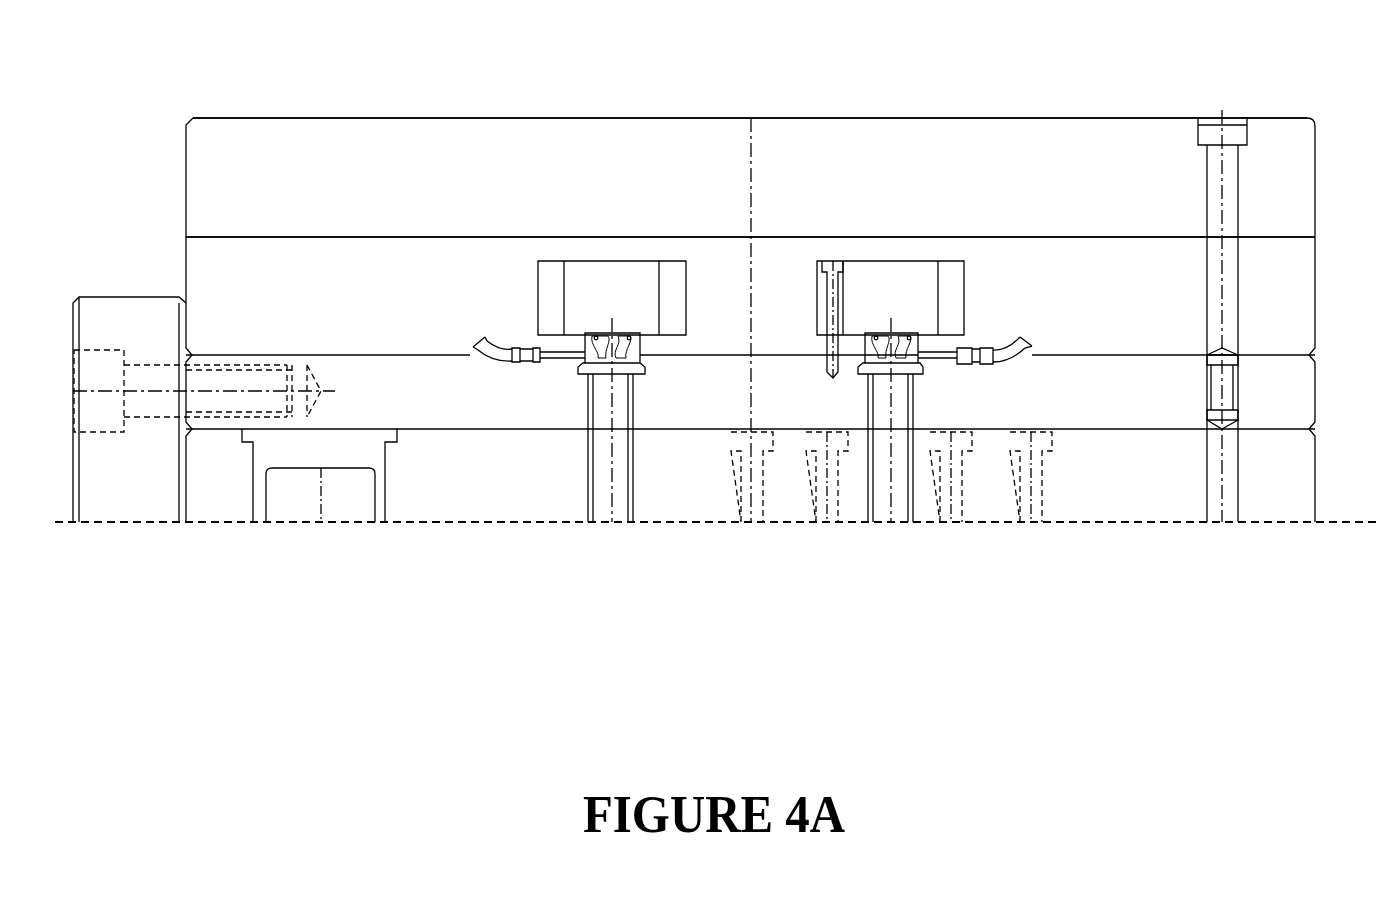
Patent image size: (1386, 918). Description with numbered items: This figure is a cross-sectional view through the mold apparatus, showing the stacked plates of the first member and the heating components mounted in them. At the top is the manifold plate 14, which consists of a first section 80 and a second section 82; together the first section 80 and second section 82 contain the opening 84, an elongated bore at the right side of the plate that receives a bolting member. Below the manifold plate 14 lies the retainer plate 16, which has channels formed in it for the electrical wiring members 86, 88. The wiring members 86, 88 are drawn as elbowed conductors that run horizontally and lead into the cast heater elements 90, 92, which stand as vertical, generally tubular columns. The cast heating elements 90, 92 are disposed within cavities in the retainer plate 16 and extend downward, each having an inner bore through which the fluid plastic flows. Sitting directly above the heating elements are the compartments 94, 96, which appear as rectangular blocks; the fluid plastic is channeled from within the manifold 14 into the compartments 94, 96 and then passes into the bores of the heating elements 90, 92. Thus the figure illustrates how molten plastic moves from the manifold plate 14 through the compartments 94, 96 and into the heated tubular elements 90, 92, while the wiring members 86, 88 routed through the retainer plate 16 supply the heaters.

The manifold plate 14 is at (417, 237).
The retainer plate 16 is at (340, 390).
The first section 80 is at (488, 150).
The second section 82 is at (712, 275).
The opening 84 is at (1207, 265).
The electrical wiring member 86 is at (483, 360).
The electrical wiring member 88 is at (1010, 350).
The cast heater element 90 is at (590, 465).
The cast heater element 92 is at (872, 470).
The compartment 94 is at (608, 277).
The compartment 96 is at (903, 280).